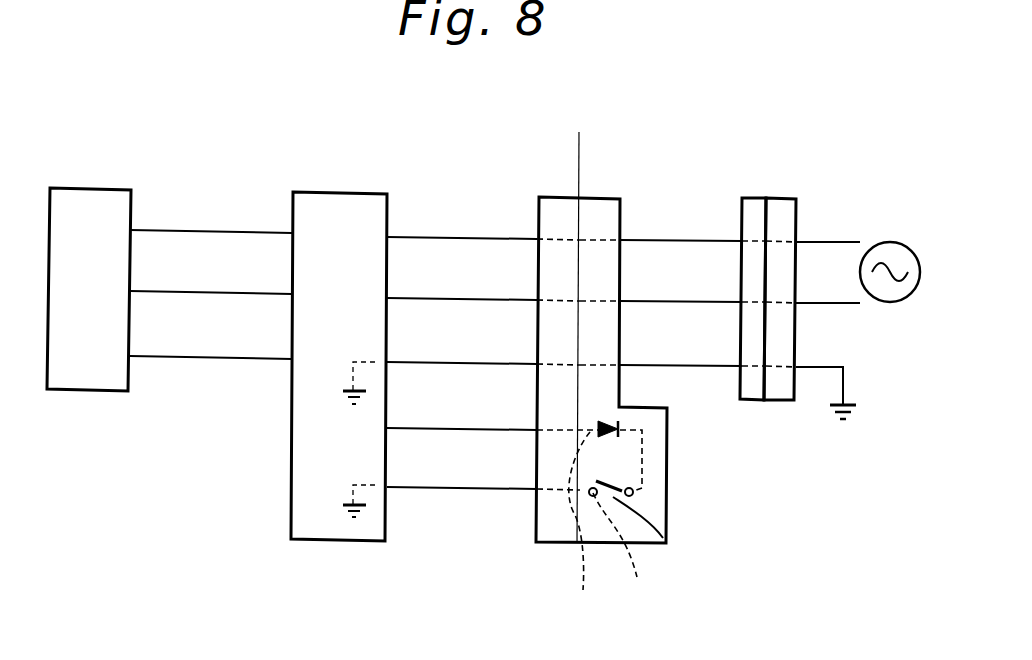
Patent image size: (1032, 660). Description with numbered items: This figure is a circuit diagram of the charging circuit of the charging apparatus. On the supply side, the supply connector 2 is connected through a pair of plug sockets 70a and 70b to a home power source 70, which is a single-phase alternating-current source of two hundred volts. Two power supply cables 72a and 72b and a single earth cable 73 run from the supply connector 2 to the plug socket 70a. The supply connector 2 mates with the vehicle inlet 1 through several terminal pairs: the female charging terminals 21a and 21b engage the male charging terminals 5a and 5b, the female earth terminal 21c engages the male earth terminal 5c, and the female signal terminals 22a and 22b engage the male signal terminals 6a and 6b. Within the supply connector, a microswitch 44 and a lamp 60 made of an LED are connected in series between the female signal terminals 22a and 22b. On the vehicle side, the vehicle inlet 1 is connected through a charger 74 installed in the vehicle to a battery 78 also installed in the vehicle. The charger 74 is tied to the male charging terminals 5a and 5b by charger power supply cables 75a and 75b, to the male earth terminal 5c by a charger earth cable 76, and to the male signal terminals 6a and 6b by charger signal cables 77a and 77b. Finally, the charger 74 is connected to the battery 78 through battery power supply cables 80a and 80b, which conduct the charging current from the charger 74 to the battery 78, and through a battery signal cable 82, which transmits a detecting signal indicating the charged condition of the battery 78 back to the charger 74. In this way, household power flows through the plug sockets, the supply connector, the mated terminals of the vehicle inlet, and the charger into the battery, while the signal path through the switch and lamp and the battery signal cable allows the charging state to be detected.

The vehicle inlet 1 is at (545, 543).
The supply connector 2 is at (640, 487).
The male charging terminal 5a is at (547, 238).
The male charging terminal 5b is at (553, 300).
The male earth terminal 5c is at (553, 364).
The male signal terminal 6a is at (555, 429).
The male signal terminal 6b is at (555, 488).
The female charging terminal 21a is at (605, 240).
The female charging terminal 21b is at (605, 301).
The female earth terminal 21c is at (600, 365).
The female signal terminal 22a is at (577, 527).
The female signal terminal 22b is at (628, 548).
The microswitch 44 is at (665, 543).
The lamp 60 is at (622, 426).
The home power source 70 is at (890, 246).
The plug socket 70a is at (755, 413).
The plug socket 70b is at (784, 401).
The power supply cable 72a is at (684, 240).
The power supply cable 72b is at (712, 292).
The earth cable 73 is at (686, 365).
The charger 74 is at (333, 540).
The charger power supply cable 75a is at (402, 237).
The charger power supply cable 75b is at (395, 298).
The charger earth cable 76 is at (398, 362).
The charger signal cable 77a is at (420, 429).
The charger signal cable 77b is at (455, 488).
The battery 78 is at (76, 390).
The battery power supply cable 80a is at (178, 230).
The battery power supply cable 80b is at (175, 292).
The battery signal cable 82 is at (168, 358).